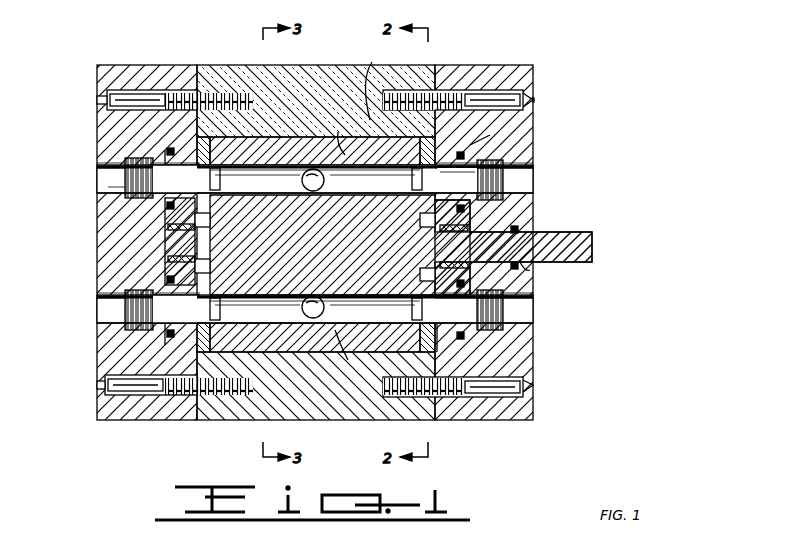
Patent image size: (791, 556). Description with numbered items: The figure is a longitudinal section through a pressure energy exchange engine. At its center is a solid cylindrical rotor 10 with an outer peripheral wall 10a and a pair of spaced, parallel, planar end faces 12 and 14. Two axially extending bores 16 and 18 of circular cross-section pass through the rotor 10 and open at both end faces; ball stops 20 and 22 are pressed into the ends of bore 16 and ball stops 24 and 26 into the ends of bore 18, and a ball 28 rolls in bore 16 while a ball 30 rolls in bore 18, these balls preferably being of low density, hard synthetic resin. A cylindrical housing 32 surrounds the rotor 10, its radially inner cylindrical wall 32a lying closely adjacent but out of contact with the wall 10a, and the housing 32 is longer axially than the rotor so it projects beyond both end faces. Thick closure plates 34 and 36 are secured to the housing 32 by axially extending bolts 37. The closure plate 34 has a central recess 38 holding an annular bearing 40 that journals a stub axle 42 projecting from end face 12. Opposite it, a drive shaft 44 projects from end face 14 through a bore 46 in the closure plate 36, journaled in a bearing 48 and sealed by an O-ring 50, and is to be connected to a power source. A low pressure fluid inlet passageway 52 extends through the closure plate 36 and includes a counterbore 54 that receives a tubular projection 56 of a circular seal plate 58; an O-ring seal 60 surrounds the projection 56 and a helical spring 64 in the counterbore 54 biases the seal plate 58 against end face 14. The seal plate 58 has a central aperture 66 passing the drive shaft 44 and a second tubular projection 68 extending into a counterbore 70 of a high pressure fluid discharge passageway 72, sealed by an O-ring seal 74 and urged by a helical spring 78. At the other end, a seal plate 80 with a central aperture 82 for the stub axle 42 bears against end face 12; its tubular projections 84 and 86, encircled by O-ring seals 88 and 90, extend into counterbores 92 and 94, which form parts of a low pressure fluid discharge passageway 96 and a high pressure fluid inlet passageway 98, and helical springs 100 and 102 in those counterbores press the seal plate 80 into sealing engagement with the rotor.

The rotor 10 is at (344, 258).
The outer peripheral wall 10a is at (262, 185).
The end face 12 is at (210, 265).
The end face 14 is at (415, 338).
The bore 16 is at (290, 335).
The bore 18 is at (272, 150).
The ball stop 20 is at (265, 335).
The ball stop 22 is at (392, 292).
The ball stop 24 is at (215, 152).
The ball stop 26 is at (398, 150).
The ball 28 is at (350, 350).
The ball 30 is at (337, 136).
The cylindrical housing 32 is at (310, 82).
The radially inner cylindrical wall 32a is at (357, 83).
The closure plate 34 is at (100, 118).
The closure plate 36 is at (520, 137).
The bolts 37 is at (125, 100).
The central recess 38 is at (165, 222).
The annular bearing 40 is at (170, 262).
The stub axle 42 is at (170, 240).
The drive shaft 44 is at (560, 240).
The bore 46 is at (530, 270).
The bearing 48 is at (455, 222).
The O-ring 50 is at (520, 228).
The low pressure fluid inlet passageway 52 is at (512, 315).
The counterbore 54 is at (465, 336).
The tubular projection 56 is at (462, 268).
The seal plate 58 is at (440, 335).
The O-ring seal 60 is at (470, 342).
The spring 64 is at (503, 300).
The central aperture 66 is at (418, 220).
The tubular projection 68 is at (460, 150).
The counterbore 70 is at (500, 160).
The high pressure fluid discharge passageway 72 is at (512, 187).
The O-ring seal 74 is at (485, 133).
The helical spring 78 is at (480, 182).
The seal plate 80 is at (210, 340).
The central aperture 82 is at (208, 218).
The tubular projection 84 is at (185, 358).
The tubular projection 86 is at (175, 152).
The O-ring seal 88 is at (173, 318).
The O-ring seal 90 is at (173, 186).
The counterbore 92 is at (160, 334).
The counterbore 94 is at (160, 196).
The low pressure fluid discharge passageway 96 is at (108, 312).
The high pressure fluid inlet passageway 98 is at (108, 183).
The helical spring 100 is at (112, 303).
The helical spring 102 is at (110, 170).